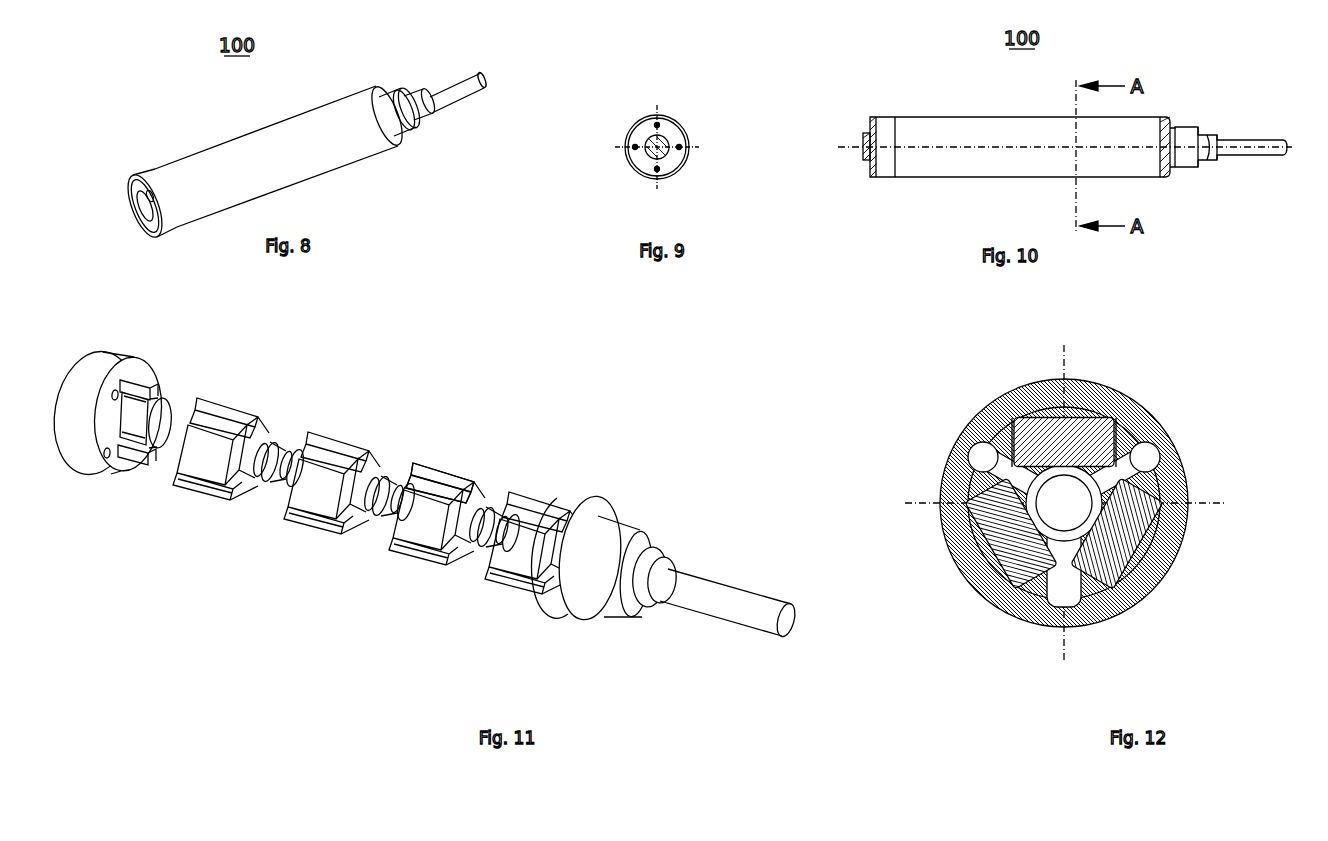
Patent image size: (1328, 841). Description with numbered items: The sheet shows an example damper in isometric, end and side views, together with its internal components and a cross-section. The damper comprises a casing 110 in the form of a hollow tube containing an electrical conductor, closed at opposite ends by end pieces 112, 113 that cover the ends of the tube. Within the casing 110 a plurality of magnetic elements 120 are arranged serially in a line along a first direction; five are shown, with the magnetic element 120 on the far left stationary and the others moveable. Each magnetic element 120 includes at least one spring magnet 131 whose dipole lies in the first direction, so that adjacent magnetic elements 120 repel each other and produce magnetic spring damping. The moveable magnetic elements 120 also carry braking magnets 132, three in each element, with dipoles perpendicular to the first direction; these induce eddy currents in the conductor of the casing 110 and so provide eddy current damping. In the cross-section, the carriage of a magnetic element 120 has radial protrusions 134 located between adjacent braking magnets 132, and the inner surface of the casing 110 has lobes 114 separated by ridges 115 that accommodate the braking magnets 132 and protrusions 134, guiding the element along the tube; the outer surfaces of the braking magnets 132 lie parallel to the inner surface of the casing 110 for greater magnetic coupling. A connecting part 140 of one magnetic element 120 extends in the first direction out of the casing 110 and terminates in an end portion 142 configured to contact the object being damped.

In FIG. 8, the casing 110 is at (203, 165).
In FIG. 9, the casing 110 is at (632, 165).
In FIG. 10, the casing 110 is at (927, 115).
In FIG. 12, the casing 110 is at (1031, 491).
In FIG. 11, the end piece 112 is at (128, 367).
In FIG. 11, the end piece 113 is at (638, 532).
In FIG. 12, the lobe 114 is at (1012, 418).
In FIG. 12, the ridge 115 is at (972, 485).
In FIG. 11, the magnetic element 120 is at (165, 400).
In FIG. 11, the spring magnet 131 is at (365, 520).
In FIG. 11, the braking magnet 132 is at (435, 507).
In FIG. 12, the braking magnet 132 is at (1165, 573).
In FIG. 12, the protrusion 134 is at (1145, 460).
In FIG. 8, the connecting part 140 is at (448, 112).
In FIG. 10, the connecting part 140 is at (1242, 153).
In FIG. 11, the connecting part 140 is at (727, 583).
In FIG. 10, the end portion 142 is at (888, 179).